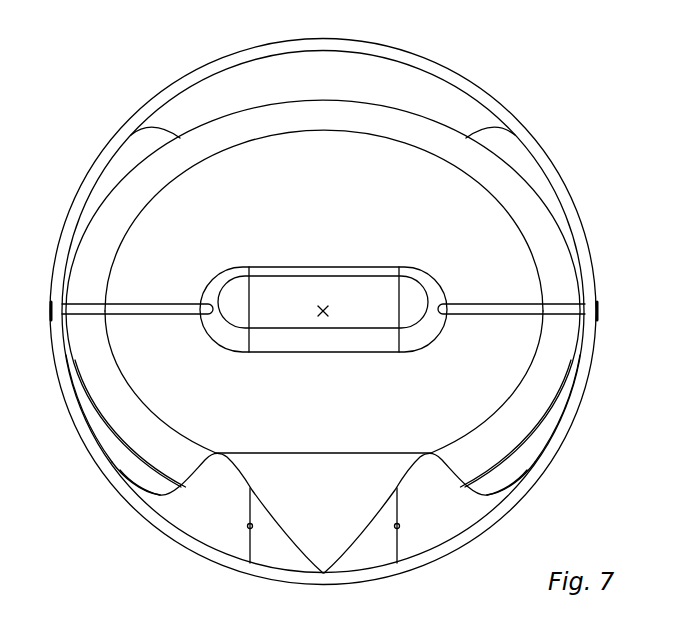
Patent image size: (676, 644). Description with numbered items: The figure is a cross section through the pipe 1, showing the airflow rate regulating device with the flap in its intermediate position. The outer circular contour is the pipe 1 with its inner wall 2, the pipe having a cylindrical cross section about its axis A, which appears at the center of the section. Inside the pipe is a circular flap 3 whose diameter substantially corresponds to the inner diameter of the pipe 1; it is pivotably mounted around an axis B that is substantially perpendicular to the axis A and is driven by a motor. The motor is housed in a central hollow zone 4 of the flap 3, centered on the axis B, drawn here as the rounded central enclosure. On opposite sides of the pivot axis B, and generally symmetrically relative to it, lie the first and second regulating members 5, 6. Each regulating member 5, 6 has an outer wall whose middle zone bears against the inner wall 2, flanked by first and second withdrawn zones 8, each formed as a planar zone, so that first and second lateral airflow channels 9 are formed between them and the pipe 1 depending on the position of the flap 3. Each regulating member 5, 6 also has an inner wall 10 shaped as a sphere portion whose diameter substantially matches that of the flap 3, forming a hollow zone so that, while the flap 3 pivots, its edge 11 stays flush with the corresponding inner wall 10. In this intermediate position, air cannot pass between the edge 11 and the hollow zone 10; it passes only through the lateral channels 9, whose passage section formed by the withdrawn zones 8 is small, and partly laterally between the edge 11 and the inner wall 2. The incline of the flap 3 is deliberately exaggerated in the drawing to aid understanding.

The pipe 1 is at (459, 82).
The inner wall 2 is at (112, 452).
The circular flap 3 is at (471, 208).
The central hollow zone 4 is at (376, 288).
The first regulating member 5 is at (437, 532).
The second regulating member 6 is at (323, 273).
The withdrawn zones 8 is at (210, 532).
The lateral airflow channels 9 is at (138, 473).
The inner wall 10 is at (193, 113).
The edge of the flap 11 is at (244, 111).
The axis of the pipe A is at (322, 301).
The pivot axis B is at (494, 310).